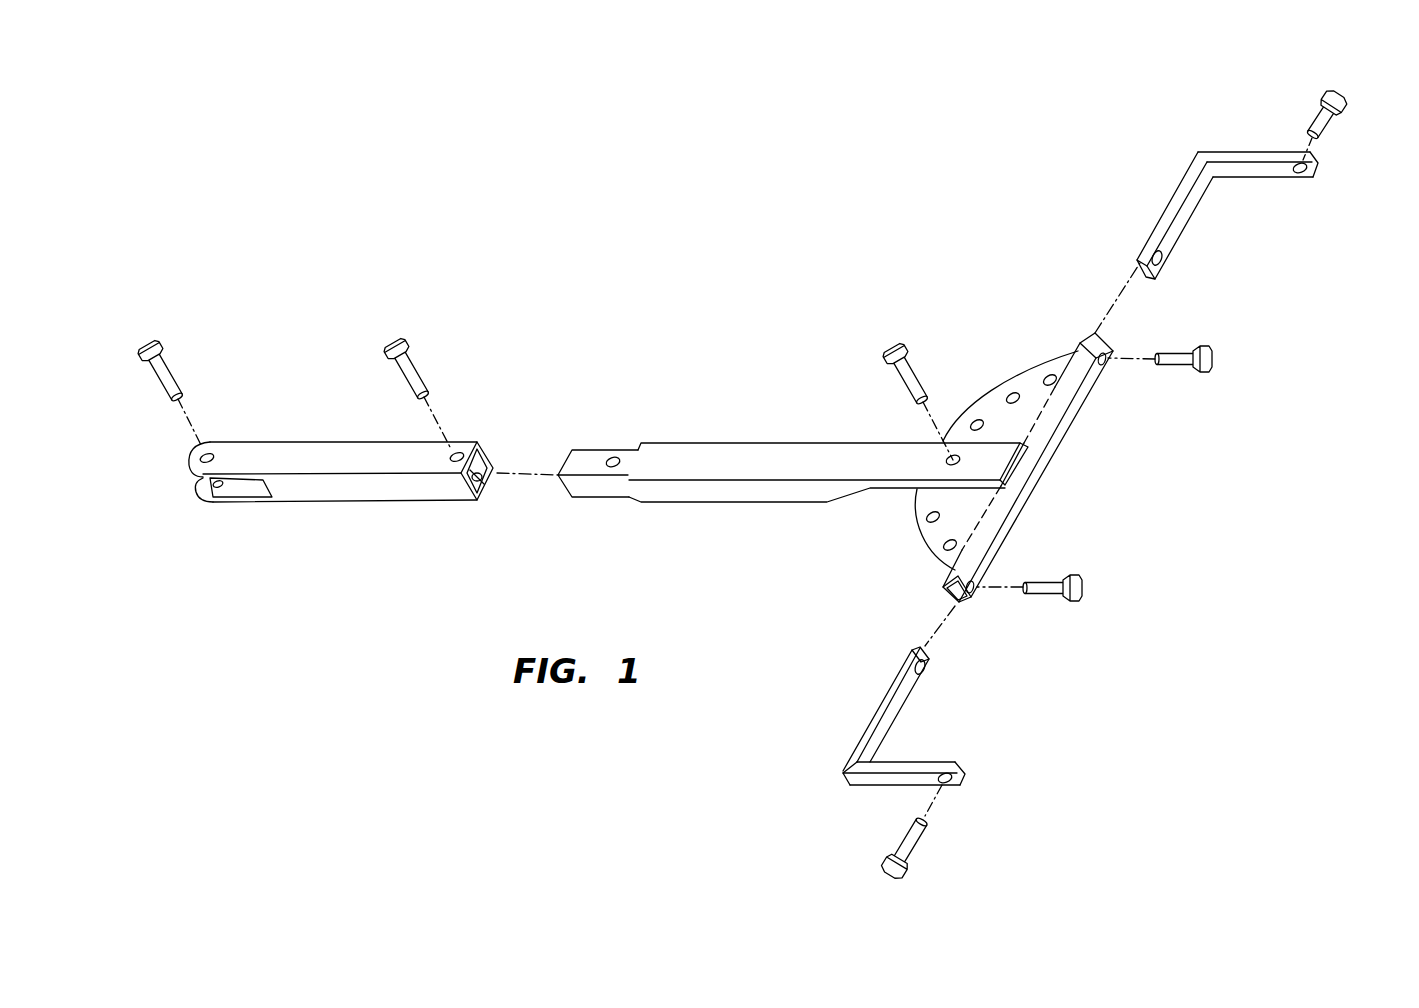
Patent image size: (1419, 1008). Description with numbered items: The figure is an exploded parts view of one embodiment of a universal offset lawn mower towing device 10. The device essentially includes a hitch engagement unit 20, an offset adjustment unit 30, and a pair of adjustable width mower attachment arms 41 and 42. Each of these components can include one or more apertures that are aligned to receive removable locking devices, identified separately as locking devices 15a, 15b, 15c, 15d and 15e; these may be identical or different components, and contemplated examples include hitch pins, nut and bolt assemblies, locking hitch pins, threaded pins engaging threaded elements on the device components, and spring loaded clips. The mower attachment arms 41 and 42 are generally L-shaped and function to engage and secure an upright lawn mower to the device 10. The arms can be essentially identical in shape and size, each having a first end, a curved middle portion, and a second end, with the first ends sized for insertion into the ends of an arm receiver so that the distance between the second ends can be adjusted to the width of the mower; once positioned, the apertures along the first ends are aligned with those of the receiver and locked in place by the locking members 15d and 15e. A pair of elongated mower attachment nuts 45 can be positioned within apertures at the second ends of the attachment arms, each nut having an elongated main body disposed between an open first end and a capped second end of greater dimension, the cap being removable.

The universal offset lawn mower towing device 10 is at (607, 152).
The hitch engagement unit 20 is at (105, 283).
The offset adjustment unit 30 is at (562, 312).
The removable locking device 15a is at (143, 338).
The removable locking device 15b is at (917, 390).
The removable locking device 15c is at (393, 337).
The locking member 15d is at (1207, 362).
The locking member 15e is at (1080, 587).
The mower attachment arm 41 is at (850, 724).
The mower attachment arm 42 is at (1156, 189).
The elongated mower attachment nut 45 is at (1335, 125).